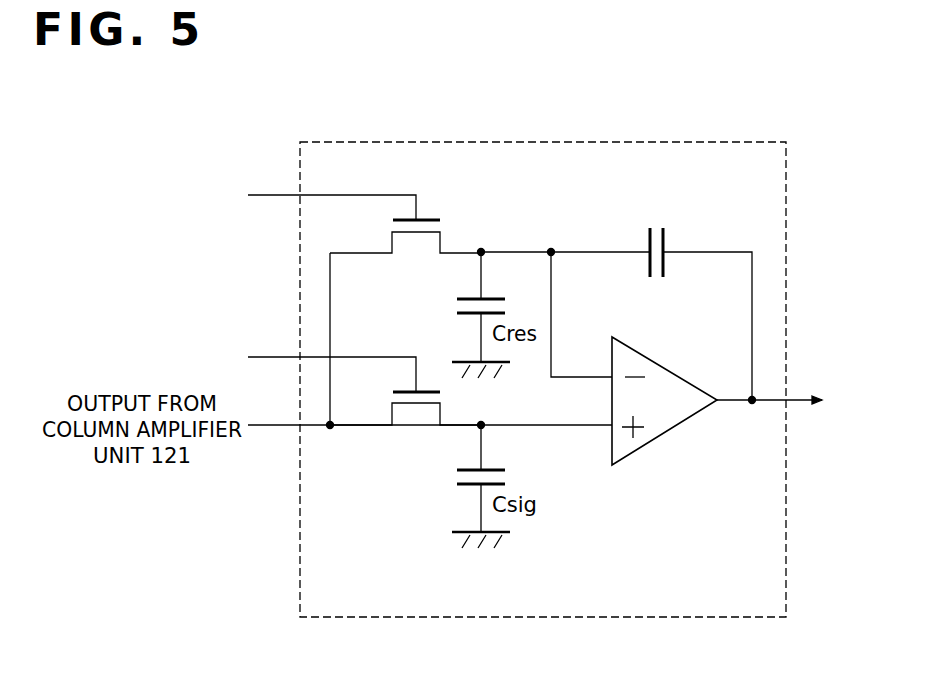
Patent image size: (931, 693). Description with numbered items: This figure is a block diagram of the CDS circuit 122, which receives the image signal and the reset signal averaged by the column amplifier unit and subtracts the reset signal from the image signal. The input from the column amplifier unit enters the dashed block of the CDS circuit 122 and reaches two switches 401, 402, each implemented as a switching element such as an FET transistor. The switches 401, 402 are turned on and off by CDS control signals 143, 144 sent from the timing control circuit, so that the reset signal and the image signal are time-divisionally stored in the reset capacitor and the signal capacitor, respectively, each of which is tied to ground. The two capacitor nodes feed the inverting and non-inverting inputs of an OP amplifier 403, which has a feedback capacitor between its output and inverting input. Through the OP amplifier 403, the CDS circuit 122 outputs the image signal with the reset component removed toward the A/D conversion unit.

The CDS circuit 122 is at (384, 141).
The CDS control signal 143 is at (317, 202).
The CDS control signal 144 is at (317, 368).
The switch 401 is at (415, 243).
The switch 402 is at (415, 414).
The OP amplifier 403 is at (678, 427).